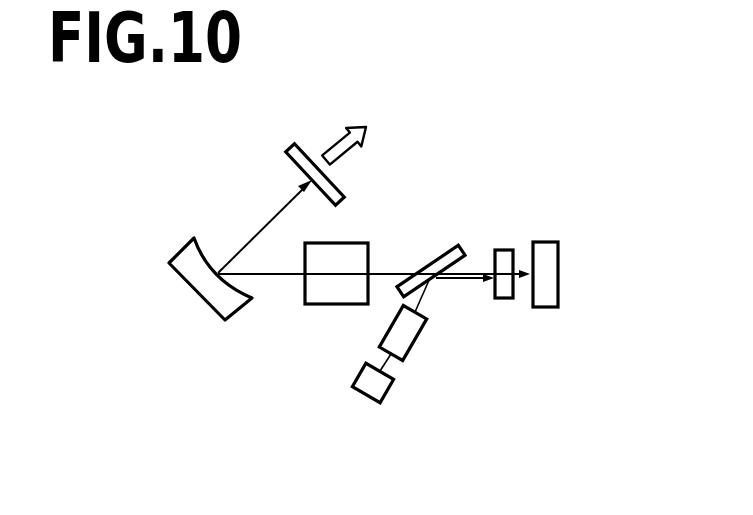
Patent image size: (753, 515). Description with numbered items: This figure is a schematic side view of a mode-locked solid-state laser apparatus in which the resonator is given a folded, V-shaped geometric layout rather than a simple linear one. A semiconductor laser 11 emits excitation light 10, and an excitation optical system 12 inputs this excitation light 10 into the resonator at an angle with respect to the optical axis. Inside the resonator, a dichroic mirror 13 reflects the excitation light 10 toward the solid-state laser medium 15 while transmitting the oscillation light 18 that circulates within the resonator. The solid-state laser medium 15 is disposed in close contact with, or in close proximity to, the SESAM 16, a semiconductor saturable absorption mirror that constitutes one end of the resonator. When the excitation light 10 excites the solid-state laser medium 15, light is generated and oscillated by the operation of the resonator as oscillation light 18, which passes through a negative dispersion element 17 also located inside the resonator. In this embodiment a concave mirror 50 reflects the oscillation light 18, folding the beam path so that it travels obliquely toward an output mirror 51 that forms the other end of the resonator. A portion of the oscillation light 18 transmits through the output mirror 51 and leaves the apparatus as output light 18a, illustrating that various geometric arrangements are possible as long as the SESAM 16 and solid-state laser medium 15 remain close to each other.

The excitation light 10 is at (463, 279).
The semiconductor laser 11 is at (388, 402).
The excitation optical system 12 is at (412, 352).
The dichroic mirror 13 is at (437, 265).
The solid-state laser medium 15 is at (503, 248).
The SESAM 16 is at (545, 242).
The negative dispersion element 17 is at (330, 305).
The oscillation light 18 is at (266, 222).
The output light 18a is at (338, 144).
The concave mirror 50 is at (178, 251).
The output mirror 51 is at (286, 149).